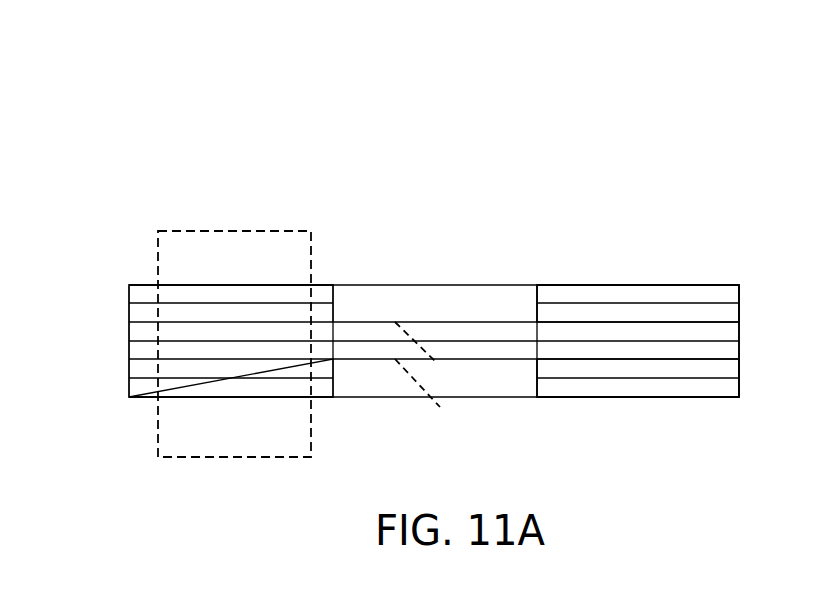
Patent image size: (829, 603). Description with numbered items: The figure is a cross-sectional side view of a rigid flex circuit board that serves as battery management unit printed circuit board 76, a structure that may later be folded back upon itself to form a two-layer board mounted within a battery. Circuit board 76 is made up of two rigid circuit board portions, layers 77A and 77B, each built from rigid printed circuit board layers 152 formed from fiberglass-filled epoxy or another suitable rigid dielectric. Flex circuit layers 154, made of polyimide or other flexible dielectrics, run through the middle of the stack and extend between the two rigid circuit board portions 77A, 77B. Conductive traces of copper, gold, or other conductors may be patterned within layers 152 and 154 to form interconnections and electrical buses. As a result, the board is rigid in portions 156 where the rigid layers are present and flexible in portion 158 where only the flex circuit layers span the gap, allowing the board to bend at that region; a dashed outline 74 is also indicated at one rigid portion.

The battery management unit printed circuit board 76 is at (615, 62).
The rigid circuit board portion 77A is at (645, 263).
The rigid circuit board portion 77B is at (106, 342).
The attachment region 74 is at (262, 231).
The rigid printed circuit board layers 152 is at (747, 285).
The flex circuit layers 154 is at (437, 363).
The rigid portions 156 is at (333, 183).
The flexible portion 158 is at (334, 183).